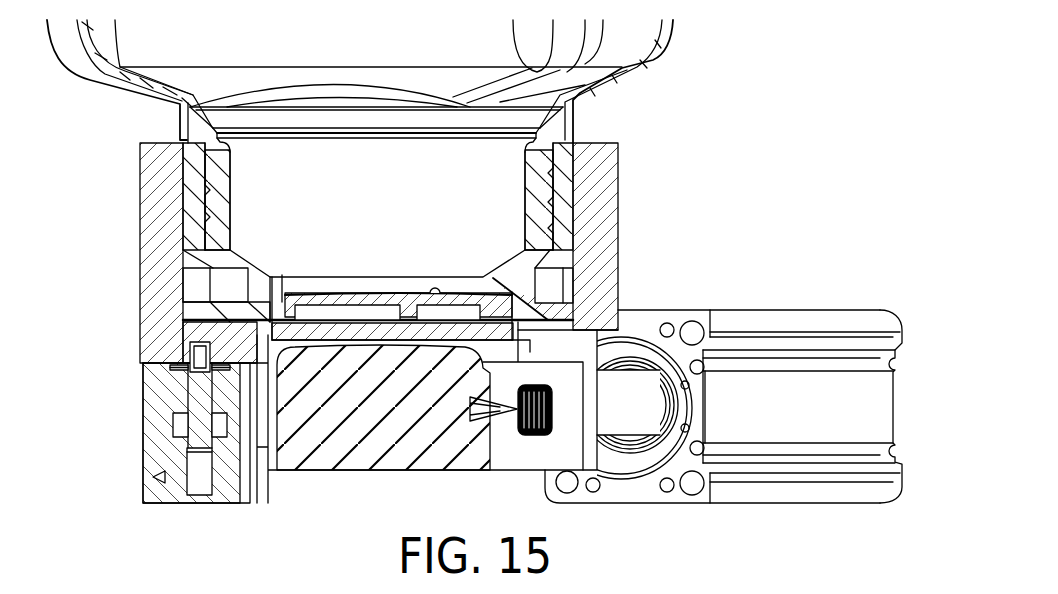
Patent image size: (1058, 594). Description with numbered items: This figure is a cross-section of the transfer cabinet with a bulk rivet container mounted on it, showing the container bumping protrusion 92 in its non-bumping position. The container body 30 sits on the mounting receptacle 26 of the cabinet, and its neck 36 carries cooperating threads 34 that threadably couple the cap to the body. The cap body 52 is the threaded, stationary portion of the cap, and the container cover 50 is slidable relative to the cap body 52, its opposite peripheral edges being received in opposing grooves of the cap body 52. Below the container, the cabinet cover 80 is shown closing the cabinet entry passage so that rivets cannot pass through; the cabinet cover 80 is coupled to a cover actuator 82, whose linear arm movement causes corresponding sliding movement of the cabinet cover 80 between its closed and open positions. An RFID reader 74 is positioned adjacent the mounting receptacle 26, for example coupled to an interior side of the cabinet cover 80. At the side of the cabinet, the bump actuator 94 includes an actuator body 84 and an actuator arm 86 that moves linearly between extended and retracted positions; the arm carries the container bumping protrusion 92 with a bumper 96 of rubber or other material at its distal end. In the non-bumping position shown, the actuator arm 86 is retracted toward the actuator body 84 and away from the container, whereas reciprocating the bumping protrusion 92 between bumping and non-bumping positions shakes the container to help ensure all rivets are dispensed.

The container body 30 is at (658, 62).
The mounting receptacle 26 is at (595, 208).
The cap body 52 is at (562, 165).
The cooperating threads 34 is at (205, 190).
The neck 36 is at (223, 213).
The container cover 50 is at (398, 300).
The cabinet cover 80 is at (352, 330).
The RFID reader 74 is at (383, 437).
The cover actuator 82 is at (797, 312).
The actuator body 84 is at (158, 408).
The actuator arm 86 is at (200, 390).
The container bumping protrusion 92 is at (188, 353).
The bumper 96 is at (197, 342).
The bump actuator 94 is at (135, 447).